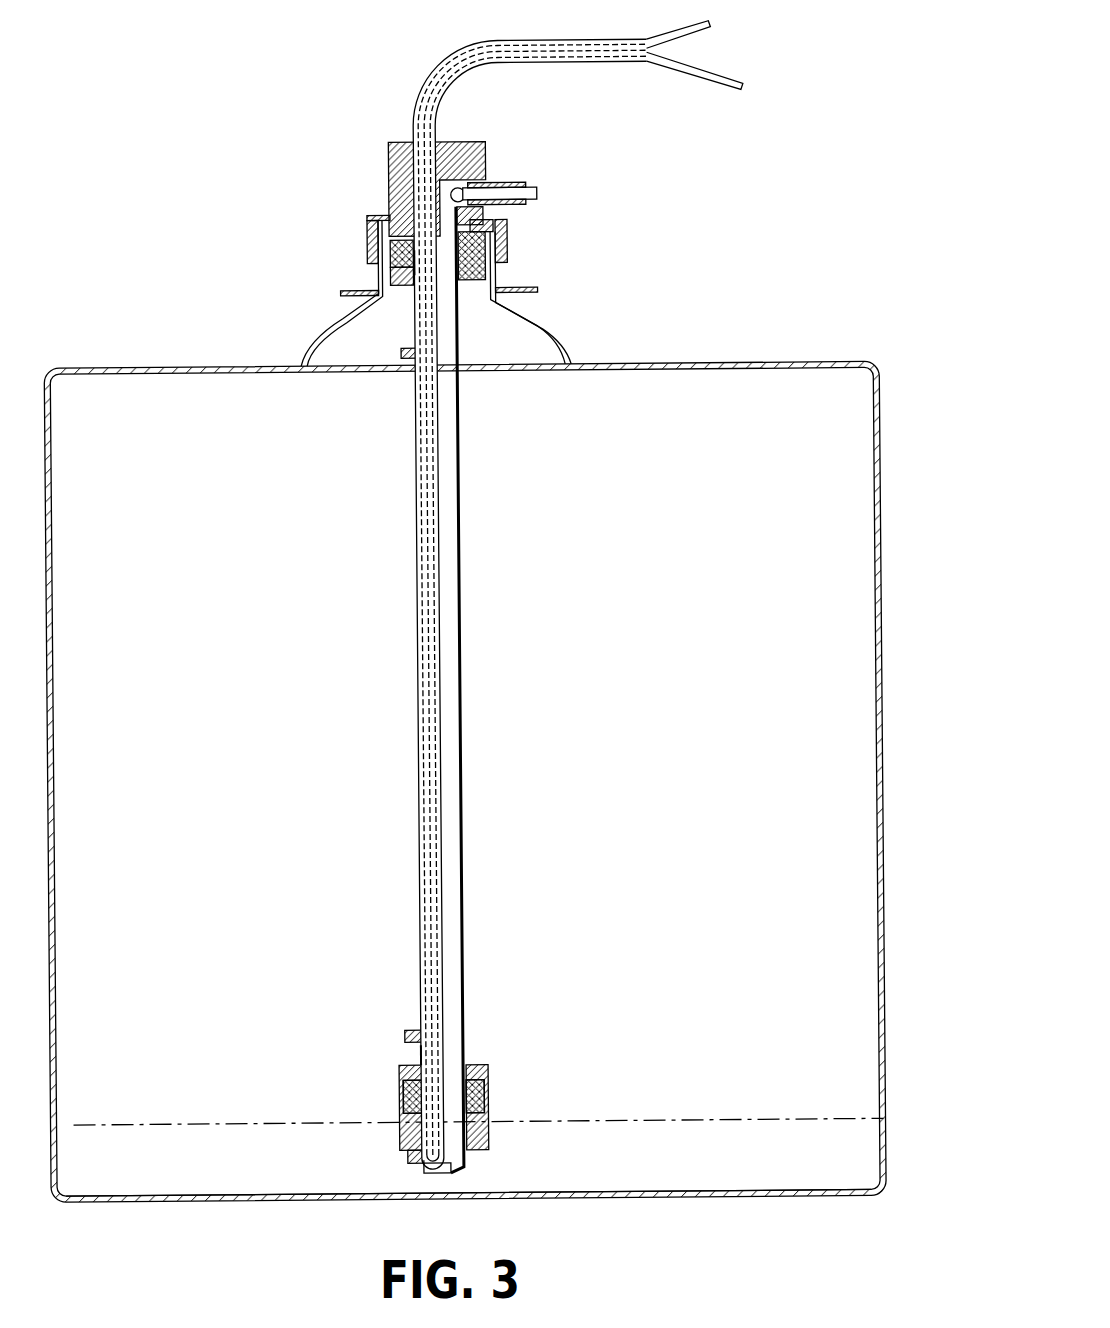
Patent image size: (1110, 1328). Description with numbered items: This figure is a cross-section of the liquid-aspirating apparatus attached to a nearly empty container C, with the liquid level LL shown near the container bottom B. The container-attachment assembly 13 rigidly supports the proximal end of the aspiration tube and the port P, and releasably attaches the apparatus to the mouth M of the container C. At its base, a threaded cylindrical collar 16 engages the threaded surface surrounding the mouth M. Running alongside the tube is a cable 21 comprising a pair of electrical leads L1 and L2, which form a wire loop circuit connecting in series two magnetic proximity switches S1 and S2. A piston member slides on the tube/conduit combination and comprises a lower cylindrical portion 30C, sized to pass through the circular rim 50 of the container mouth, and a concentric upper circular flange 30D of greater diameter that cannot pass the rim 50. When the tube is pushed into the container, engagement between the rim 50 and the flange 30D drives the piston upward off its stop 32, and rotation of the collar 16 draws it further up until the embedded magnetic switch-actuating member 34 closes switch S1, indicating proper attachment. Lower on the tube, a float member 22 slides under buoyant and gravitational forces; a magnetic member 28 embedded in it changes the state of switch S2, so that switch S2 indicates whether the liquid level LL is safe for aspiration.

The cable 21 is at (431, 80).
The electrical lead L1 is at (704, 31).
The electrical lead L2 is at (720, 79).
The port P is at (509, 180).
The threaded cylindrical collar 16 is at (393, 218).
The circular rim 50 is at (372, 242).
The container-attachment assembly 13 is at (515, 224).
The upper circular flange 30D is at (499, 234).
The magnetic switch-actuating member 34 is at (427, 254).
The mouth M is at (508, 274).
The magnetic proximity switch S1 is at (417, 272).
The lower cylindrical portion 30C is at (476, 286).
The container C is at (660, 360).
The stop 32 is at (406, 357).
The magnetic proximity switch S2 is at (420, 1055).
The float member 22 is at (487, 1070).
The magnetic member 28 is at (483, 1098).
The container bottom B is at (159, 1186).
The liquid level LL is at (657, 1120).